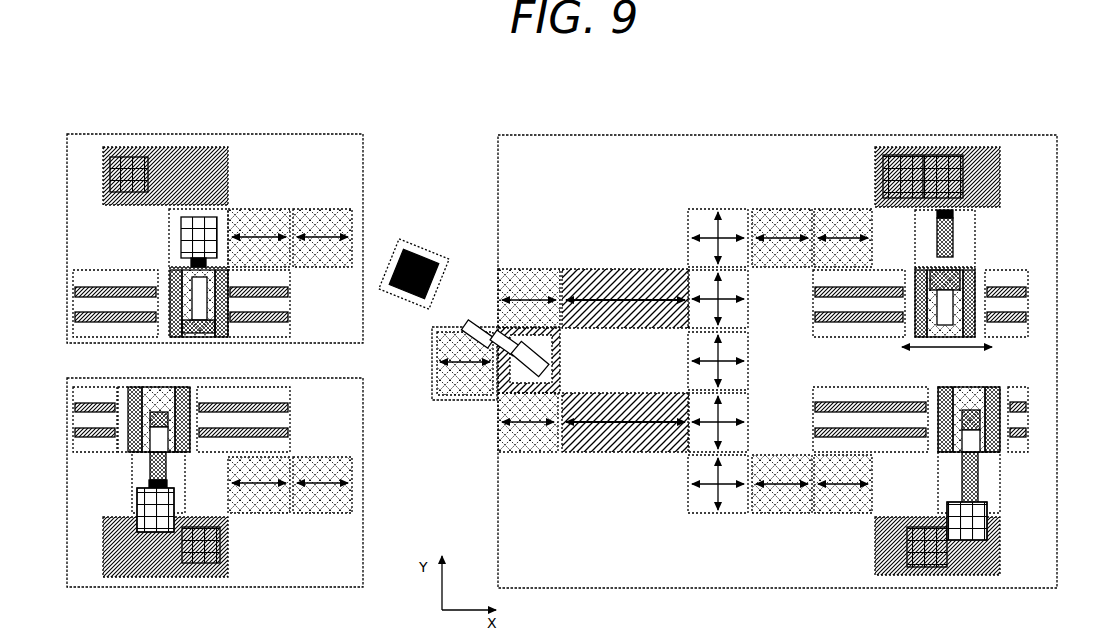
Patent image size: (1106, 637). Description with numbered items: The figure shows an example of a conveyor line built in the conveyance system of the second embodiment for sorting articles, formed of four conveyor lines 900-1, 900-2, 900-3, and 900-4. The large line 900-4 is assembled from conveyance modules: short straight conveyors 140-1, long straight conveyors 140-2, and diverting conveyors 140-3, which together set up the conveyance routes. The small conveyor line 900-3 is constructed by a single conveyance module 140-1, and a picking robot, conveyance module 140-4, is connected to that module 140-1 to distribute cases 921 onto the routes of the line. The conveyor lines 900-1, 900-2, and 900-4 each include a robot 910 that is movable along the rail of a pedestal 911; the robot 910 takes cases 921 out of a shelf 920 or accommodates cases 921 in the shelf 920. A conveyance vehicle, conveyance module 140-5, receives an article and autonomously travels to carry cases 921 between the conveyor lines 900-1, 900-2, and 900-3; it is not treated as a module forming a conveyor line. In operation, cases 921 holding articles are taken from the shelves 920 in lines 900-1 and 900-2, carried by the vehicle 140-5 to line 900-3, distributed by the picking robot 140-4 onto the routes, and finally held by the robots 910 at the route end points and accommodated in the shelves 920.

The conveyor line 900-1 is at (317, 135).
The conveyor line 900-2 is at (310, 378).
The conveyor line 900-3 is at (432, 367).
The conveyor line 900-4 is at (990, 135).
The conveyance module 140-1 is at (793, 198).
The conveyance module 140-2 is at (651, 259).
The conveyance module 140-3 is at (731, 199).
The conveyance module 140-4 is at (562, 357).
The conveyance module 140-5 is at (432, 252).
The robot 910 is at (983, 267).
The pedestal 911 is at (1008, 340).
The shelf 920 is at (1003, 173).
The case 921 is at (883, 170).